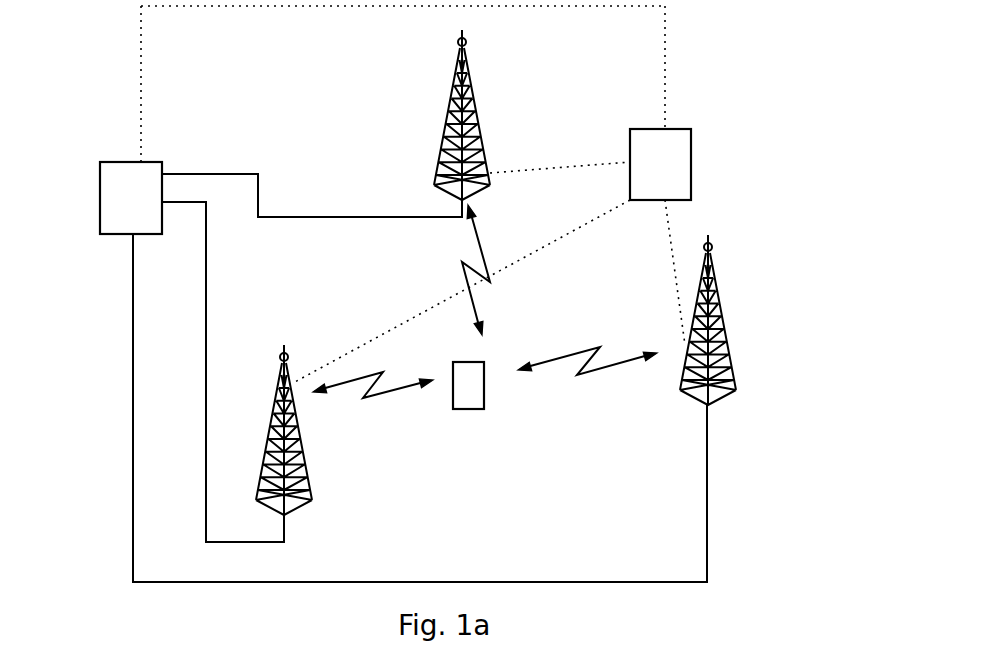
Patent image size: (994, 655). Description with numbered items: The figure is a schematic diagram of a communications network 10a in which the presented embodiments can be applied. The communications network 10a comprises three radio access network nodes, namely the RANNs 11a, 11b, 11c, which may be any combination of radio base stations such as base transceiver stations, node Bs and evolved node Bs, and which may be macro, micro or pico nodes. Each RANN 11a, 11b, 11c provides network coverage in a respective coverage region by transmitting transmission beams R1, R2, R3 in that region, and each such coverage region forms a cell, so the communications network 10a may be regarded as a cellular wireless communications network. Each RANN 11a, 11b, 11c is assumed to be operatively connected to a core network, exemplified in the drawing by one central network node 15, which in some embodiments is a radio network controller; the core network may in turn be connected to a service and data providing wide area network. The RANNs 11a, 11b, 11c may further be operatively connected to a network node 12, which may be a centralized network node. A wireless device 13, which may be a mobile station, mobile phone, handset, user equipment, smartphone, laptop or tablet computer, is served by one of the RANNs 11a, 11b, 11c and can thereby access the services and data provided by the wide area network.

The communications network 10a is at (760, 52).
The radio access network node 11a is at (310, 485).
The radio access network node 11b is at (465, 90).
The radio access network node 11c is at (697, 303).
The network node 12 is at (100, 200).
The wireless device 13 is at (467, 392).
The central network node 15 is at (691, 158).
The transmission beam R1 is at (373, 412).
The transmission beam R2 is at (490, 270).
The transmission beam R3 is at (587, 384).